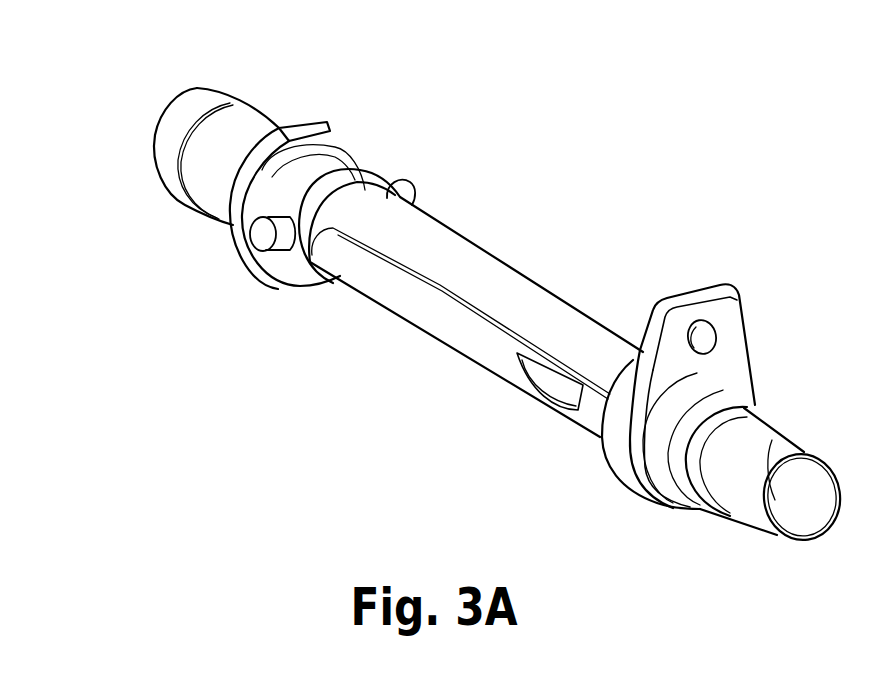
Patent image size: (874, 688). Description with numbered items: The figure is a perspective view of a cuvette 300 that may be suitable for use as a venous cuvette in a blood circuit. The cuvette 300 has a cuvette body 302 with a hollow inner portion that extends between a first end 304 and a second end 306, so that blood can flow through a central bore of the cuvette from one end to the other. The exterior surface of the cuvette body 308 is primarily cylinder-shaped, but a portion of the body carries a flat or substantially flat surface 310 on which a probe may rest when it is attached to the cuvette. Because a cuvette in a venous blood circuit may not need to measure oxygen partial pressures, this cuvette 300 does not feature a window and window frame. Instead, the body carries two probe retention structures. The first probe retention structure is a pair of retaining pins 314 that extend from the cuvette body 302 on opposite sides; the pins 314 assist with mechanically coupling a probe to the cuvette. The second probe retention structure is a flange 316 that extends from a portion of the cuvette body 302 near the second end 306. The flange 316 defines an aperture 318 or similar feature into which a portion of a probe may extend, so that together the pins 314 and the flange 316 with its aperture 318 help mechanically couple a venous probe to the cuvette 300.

The cuvette 300 is at (533, 129).
The cuvette body 302 is at (366, 172).
The first end 304 is at (157, 100).
The second end 306 is at (800, 514).
The exterior surface of the cuvette body 308 is at (445, 325).
The flat surface 310 is at (562, 326).
The retaining pins 314 is at (262, 237).
The flange 316 is at (737, 320).
The aperture 318 is at (697, 326).